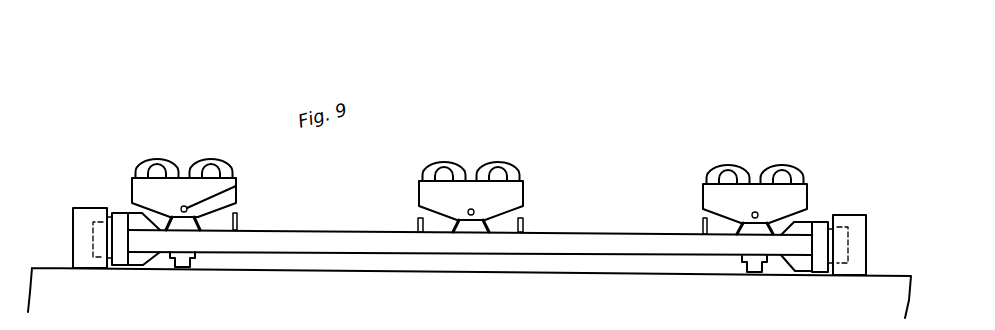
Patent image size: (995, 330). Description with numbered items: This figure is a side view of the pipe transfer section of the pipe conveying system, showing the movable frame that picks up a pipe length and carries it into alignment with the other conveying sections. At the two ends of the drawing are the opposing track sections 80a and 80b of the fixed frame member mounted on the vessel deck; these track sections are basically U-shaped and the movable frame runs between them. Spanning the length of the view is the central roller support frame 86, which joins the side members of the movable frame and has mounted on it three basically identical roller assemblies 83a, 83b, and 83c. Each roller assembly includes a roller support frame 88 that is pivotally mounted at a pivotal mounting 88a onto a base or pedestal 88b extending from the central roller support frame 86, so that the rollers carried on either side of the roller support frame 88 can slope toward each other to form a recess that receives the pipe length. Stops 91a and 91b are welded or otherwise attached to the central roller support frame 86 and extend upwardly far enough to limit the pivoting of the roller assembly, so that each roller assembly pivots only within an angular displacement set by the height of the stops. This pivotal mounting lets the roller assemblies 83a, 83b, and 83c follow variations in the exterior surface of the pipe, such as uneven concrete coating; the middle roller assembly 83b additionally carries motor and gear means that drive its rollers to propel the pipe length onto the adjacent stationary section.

The track section 80a is at (855, 216).
The track section 80b is at (83, 208).
The roller assembly 83a is at (187, 210).
The roller assembly 83b is at (494, 190).
The roller assembly 83c is at (780, 193).
The central roller support frame 86 is at (296, 236).
The roller support frame 88 is at (137, 183).
The pivotal mounting 88a is at (238, 187).
The base or pedestal 88b is at (200, 221).
The stop 91a is at (525, 226).
The stop 91b is at (416, 225).